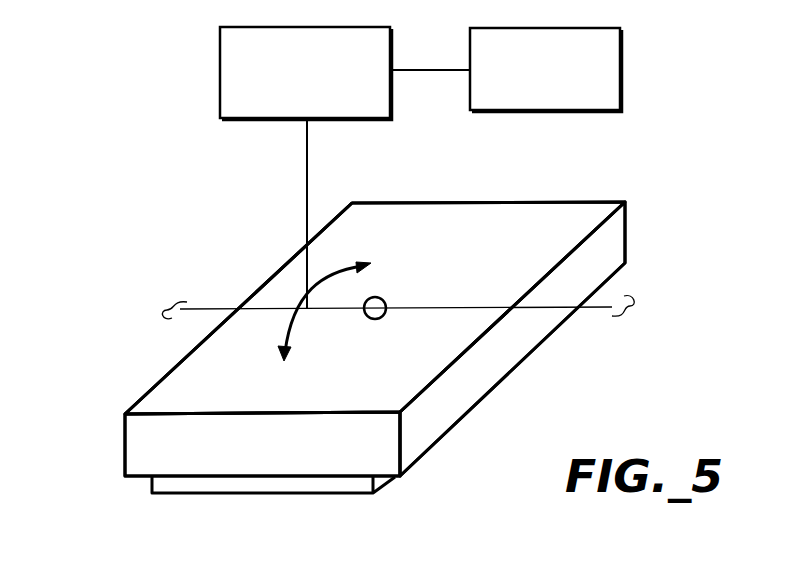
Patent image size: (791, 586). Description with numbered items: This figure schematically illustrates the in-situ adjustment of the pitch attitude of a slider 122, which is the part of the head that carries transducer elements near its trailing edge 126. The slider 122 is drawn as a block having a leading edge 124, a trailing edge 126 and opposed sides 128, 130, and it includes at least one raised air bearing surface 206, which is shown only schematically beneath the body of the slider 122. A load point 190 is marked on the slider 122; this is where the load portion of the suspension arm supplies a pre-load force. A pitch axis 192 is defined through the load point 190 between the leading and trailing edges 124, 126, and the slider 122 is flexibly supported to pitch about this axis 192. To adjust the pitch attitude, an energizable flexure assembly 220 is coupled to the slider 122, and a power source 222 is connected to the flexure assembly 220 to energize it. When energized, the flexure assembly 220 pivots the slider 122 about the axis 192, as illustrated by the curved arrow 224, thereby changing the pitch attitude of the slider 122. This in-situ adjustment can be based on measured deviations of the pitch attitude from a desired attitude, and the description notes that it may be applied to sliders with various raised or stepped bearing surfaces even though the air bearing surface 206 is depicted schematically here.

The flexure assembly 220 is at (340, 121).
The power source 222 is at (535, 112).
The slider 122 is at (627, 233).
The leading edge 124 is at (435, 202).
The side 128 is at (480, 388).
The trailing edge 126 is at (135, 452).
The side 130 is at (153, 390).
The raised air bearing surface 206 is at (223, 495).
The pitch axis 192 is at (547, 308).
The load point 190 is at (383, 297).
The arrow 224 is at (300, 305).